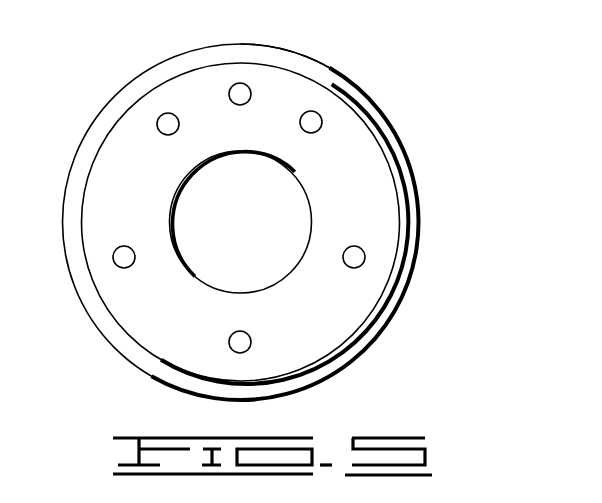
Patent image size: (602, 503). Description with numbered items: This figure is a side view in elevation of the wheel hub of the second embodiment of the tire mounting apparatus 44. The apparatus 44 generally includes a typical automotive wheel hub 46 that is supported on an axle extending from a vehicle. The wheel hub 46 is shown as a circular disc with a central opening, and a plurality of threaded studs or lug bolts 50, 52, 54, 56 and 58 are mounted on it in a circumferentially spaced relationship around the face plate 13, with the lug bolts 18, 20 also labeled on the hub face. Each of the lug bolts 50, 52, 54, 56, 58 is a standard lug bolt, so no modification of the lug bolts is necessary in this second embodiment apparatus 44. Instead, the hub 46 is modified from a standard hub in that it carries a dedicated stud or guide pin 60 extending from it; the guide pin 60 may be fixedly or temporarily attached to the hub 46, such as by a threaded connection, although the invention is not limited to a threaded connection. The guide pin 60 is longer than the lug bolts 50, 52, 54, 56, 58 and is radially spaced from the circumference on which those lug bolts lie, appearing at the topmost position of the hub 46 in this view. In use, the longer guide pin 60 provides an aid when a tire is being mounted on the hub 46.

The tire mounting apparatus 44 is at (374, 39).
The wheel hub 46 is at (120, 173).
The lug bolt 18 is at (358, 175).
The lug bolt 20 is at (318, 326).
The guide pin 60 is at (245, 87).
The lug bolt 50 is at (314, 118).
The lug bolt 58 is at (166, 126).
The lug bolt 56 is at (120, 261).
The lug bolt 52 is at (351, 261).
The lug bolt 54 is at (240, 349).
The face plate 13 is at (143, 247).